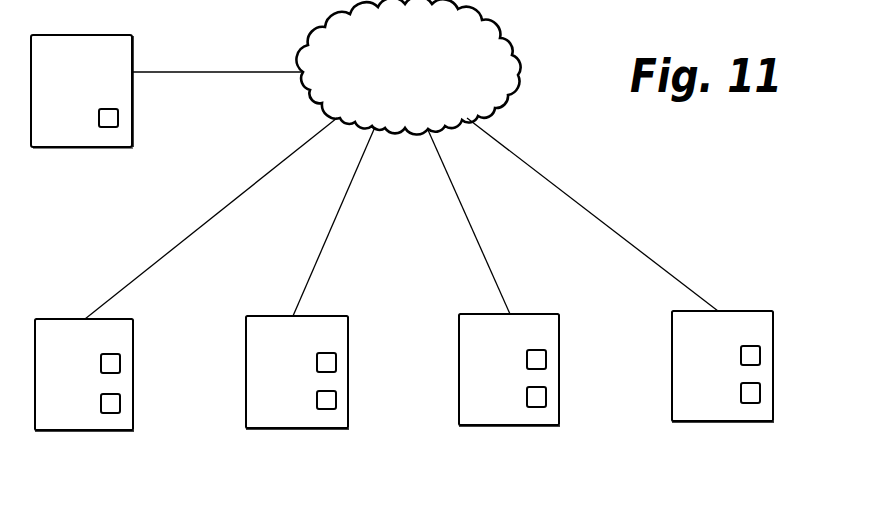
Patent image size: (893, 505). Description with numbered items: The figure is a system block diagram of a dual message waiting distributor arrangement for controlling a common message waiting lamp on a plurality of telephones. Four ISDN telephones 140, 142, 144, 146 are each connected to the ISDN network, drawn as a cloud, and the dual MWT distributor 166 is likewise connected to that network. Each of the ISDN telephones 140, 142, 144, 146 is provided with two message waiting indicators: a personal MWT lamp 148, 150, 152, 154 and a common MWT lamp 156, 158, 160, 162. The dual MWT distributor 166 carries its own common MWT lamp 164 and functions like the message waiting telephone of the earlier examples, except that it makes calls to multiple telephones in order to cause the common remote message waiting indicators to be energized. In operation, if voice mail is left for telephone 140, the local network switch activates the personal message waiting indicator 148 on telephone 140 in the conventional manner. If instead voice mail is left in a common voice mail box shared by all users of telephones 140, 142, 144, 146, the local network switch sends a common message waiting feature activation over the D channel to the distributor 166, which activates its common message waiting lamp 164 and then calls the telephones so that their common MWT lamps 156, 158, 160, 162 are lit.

The ISDN telephone 140 is at (93, 430).
The ISDN telephone 142 is at (308, 428).
The ISDN telephone 144 is at (518, 425).
The ISDN telephone 146 is at (730, 421).
The personal MWT lamp 148 is at (121, 365).
The personal MWT lamp 150 is at (337, 362).
The personal MWT lamp 152 is at (547, 360).
The personal MWT lamp 154 is at (761, 356).
The common MWT lamp 156 is at (121, 405).
The common MWT lamp 158 is at (337, 400).
The common MWT lamp 160 is at (547, 397).
The common MWT lamp 162 is at (761, 393).
The common MWT lamp 164 is at (108, 128).
The dual MWT distributor 166 is at (91, 148).